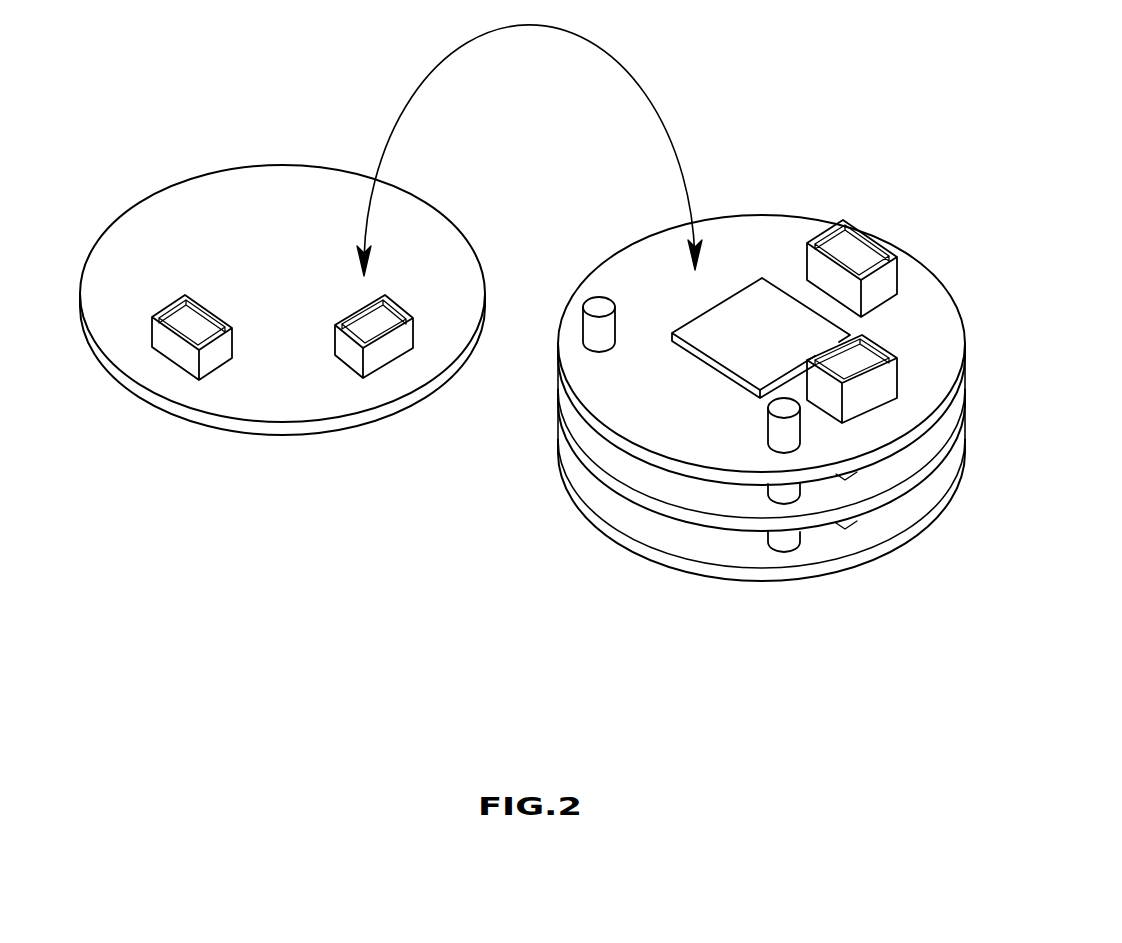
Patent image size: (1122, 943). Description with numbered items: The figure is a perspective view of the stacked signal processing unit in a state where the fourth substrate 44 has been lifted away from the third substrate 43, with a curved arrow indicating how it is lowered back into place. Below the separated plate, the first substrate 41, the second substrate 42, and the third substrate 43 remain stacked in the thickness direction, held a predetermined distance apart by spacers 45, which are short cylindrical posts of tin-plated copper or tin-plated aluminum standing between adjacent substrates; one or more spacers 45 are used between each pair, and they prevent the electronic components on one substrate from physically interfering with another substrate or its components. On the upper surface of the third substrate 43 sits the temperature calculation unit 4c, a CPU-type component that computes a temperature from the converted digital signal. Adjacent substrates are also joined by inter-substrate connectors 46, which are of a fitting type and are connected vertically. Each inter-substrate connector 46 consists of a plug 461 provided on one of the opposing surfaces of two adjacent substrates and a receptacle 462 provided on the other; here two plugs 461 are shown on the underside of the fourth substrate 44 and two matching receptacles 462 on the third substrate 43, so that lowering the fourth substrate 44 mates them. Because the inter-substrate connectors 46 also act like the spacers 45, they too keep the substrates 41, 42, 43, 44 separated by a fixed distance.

The fourth substrate 44 is at (187, 178).
The plug 461 is at (172, 300).
The receptacle 462 is at (853, 250).
The inter-substrate connector 46 is at (587, 345).
The temperature calculation unit 4c is at (760, 313).
The third substrate 43 is at (937, 277).
The second substrate 42 is at (925, 483).
The first substrate 41 is at (657, 568).
The spacer 45 is at (591, 294).